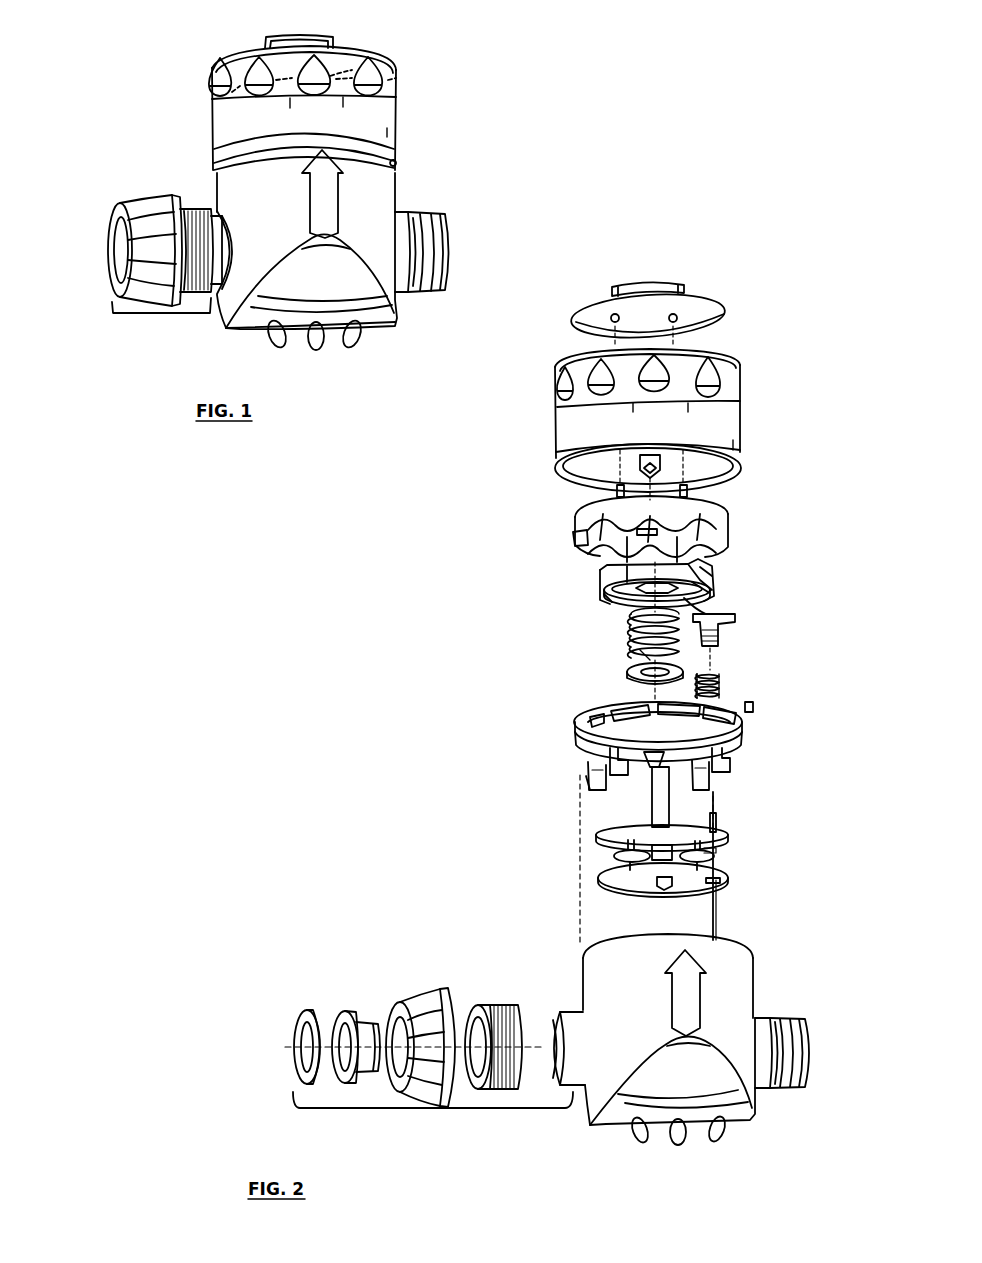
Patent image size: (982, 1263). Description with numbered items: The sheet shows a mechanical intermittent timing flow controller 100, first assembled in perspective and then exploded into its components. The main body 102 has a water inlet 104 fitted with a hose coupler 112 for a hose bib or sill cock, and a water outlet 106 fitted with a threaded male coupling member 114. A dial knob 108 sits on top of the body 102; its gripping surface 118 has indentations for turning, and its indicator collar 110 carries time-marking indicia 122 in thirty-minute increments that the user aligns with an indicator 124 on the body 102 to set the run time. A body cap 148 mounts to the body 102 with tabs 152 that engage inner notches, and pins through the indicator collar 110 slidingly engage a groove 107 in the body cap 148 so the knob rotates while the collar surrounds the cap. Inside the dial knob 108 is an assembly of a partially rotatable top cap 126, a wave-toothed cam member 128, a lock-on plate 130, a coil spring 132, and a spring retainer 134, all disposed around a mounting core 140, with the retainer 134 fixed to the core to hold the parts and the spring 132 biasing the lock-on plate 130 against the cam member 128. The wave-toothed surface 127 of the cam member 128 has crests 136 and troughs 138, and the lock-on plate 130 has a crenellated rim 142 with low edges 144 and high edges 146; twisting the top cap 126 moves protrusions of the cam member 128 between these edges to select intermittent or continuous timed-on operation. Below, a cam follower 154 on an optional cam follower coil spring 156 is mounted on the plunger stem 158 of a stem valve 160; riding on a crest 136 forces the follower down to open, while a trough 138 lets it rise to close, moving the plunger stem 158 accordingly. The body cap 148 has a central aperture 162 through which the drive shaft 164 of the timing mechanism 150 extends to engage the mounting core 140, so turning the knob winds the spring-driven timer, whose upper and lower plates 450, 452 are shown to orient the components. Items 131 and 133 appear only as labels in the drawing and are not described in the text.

In FIG. 1, the mechanical intermittent timing flow controller 100 is at (103, 103).
In FIG. 2, the mechanical intermittent timing flow controller 100 is at (424, 683).
In FIG. 1, the main body 102 is at (406, 310).
In FIG. 2, the main body 102 is at (764, 1108).
In FIG. 1, the water inlet 104 is at (96, 258).
In FIG. 2, the water inlet 104 is at (288, 1050).
In FIG. 1, the water outlet 106 is at (456, 253).
In FIG. 2, the water outlet 106 is at (820, 1053).
In FIG. 2, the groove 107 is at (583, 742).
In FIG. 1, the dial knob 108 is at (242, 56).
In FIG. 2, the dial knob 108 is at (748, 412).
In FIG. 1, the indicator collar 110 is at (212, 147).
In FIG. 2, the indicator collar 110 is at (556, 450).
In FIG. 1, the hose coupler 112 is at (158, 310).
In FIG. 2, the hose coupler 112 is at (430, 1112).
In FIG. 1, the male coupling member 114 is at (420, 213).
In FIG. 2, the male coupling member 114 is at (780, 1016).
In FIG. 1, the gripping surface 118 is at (295, 75).
In FIG. 2, the gripping surface 118 is at (720, 375).
In FIG. 2, the time-marking indicia 122 is at (742, 452).
In FIG. 1, the indicator 124 is at (327, 193).
In FIG. 2, the indicator 124 is at (690, 993).
In FIG. 1, the top cap 126 is at (308, 38).
In FIG. 2, the top cap 126 is at (715, 303).
In FIG. 2, the wave-toothed surface 127 is at (568, 543).
In FIG. 1, the wave-toothed cam member 128 is at (382, 78).
In FIG. 2, the wave-toothed cam member 128 is at (729, 525).
In FIG. 2, the lock-on plate 130 is at (606, 570).
In FIG. 2, the follower flange 131 is at (608, 602).
In FIG. 2, the coil spring 132 is at (632, 638).
In FIG. 2, the follower tab 133 is at (706, 616).
In FIG. 2, the spring retainer 134 is at (628, 673).
In FIG. 2, the crests 136 is at (600, 557).
In FIG. 2, the troughs 138 is at (712, 562).
In FIG. 2, the mounting core 140 is at (642, 465).
In FIG. 2, the crenellated rim 142 is at (714, 578).
In FIG. 2, the low edges 144 is at (612, 600).
In FIG. 2, the high edges 146 is at (708, 594).
In FIG. 2, the body cap 148 is at (745, 734).
In FIG. 2, the timing mechanism 150 is at (780, 859).
In FIG. 2, the tabs 152 is at (586, 790).
In FIG. 1, the cam follower 154 is at (397, 101).
In FIG. 2, the cam follower 154 is at (735, 628).
In FIG. 2, the cam follower coil spring 156 is at (720, 688).
In FIG. 2, the plunger stem 158 is at (718, 822).
In FIG. 2, the stem valve 160 is at (736, 938).
In FIG. 2, the central aperture 162 is at (664, 752).
In FIG. 2, the drive shaft 164 is at (656, 803).
In FIG. 2, the upper plate 450 is at (729, 843).
In FIG. 2, the lower plate 452 is at (728, 882).